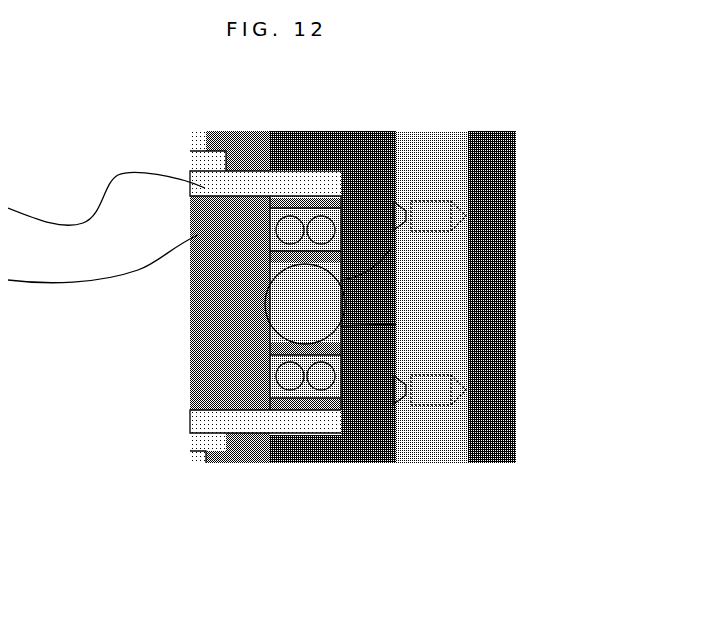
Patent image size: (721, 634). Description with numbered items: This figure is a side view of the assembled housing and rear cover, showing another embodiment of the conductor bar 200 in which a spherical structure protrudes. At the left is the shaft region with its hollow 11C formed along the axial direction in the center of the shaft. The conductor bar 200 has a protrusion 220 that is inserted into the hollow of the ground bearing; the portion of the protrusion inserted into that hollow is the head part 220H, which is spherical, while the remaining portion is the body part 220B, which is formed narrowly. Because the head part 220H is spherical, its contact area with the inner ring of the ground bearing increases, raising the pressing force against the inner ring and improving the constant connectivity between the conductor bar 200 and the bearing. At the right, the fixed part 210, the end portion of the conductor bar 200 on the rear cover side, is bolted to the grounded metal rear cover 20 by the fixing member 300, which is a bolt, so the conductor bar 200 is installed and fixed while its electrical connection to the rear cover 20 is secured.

The hollow 11C is at (185, 290).
The rear cover 20 is at (430, 148).
The conductor bar 200 is at (342, 357).
The fixed part 210 is at (407, 85).
The protrusion 220 is at (329, 345).
The head part 220H is at (333, 85).
The body part 220B is at (387, 85).
The fixing member 300 is at (450, 214).